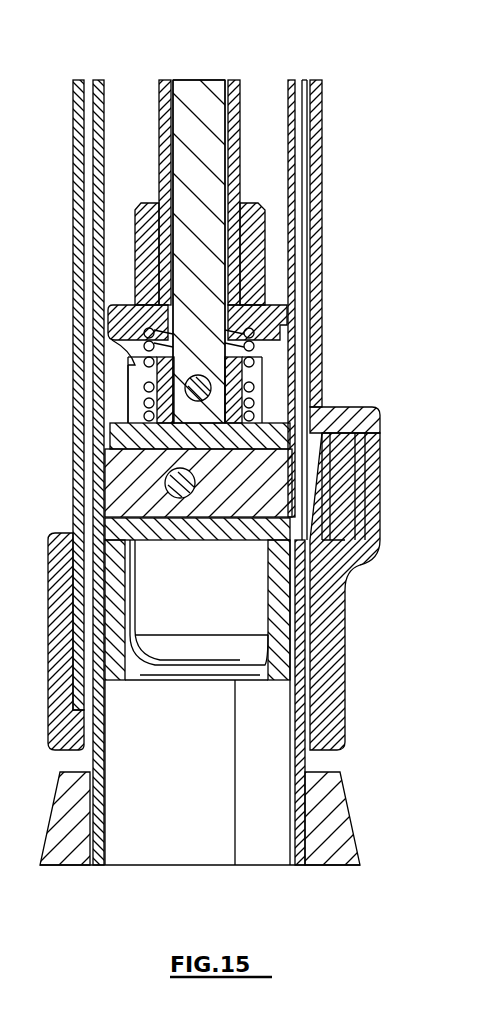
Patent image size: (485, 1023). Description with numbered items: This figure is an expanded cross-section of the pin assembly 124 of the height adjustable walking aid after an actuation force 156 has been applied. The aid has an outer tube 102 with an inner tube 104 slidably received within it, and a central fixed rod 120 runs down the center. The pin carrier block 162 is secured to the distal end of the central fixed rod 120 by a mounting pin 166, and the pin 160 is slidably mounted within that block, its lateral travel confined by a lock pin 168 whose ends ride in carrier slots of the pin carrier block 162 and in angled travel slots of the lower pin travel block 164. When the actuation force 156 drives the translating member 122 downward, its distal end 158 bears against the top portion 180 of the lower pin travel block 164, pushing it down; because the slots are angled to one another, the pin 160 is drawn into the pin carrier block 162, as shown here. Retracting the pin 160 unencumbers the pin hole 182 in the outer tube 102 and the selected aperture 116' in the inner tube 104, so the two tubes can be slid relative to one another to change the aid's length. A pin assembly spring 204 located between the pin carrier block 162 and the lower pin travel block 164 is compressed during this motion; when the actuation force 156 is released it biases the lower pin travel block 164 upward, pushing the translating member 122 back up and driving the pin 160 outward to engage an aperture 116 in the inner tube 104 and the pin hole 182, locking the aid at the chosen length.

The outer tube 102 is at (320, 120).
The inner tube 104 is at (300, 195).
The aperture 116 is at (344, 310).
The selected aperture 116' is at (359, 685).
The central fixed rod 120 is at (195, 85).
The translating member 122 is at (243, 100).
The pin assembly 124 is at (123, 412).
The actuation force 156 is at (203, 115).
The distal end 158 is at (237, 293).
The pin 160 is at (295, 470).
The pin carrier block 162 is at (285, 608).
The lower pin travel block 164 is at (275, 325).
The mounting pin 166 is at (212, 392).
The lock pin 168 is at (184, 496).
The top portion 180 is at (148, 217).
The pin hole 182 is at (322, 465).
The pin assembly spring 204 is at (125, 360).